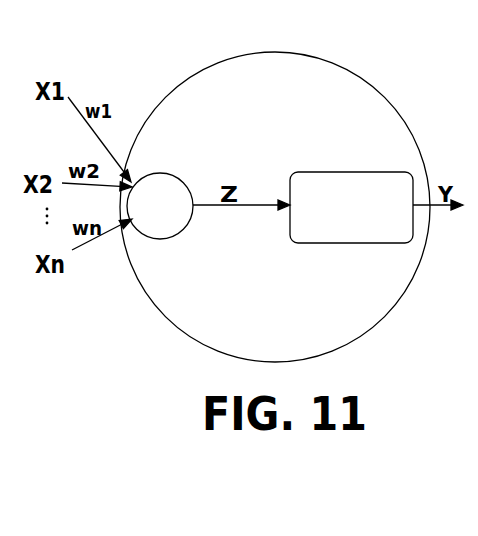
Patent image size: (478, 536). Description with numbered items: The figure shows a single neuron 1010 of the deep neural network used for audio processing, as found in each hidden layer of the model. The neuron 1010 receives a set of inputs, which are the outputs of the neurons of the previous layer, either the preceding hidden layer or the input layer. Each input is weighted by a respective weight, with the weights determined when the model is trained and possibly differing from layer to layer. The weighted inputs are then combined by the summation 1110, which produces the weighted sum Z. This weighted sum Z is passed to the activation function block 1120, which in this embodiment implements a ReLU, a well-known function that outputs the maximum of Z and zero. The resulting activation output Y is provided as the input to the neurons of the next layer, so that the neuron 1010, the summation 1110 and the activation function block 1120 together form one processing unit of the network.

The neuron 1010 is at (313, 44).
The summation 1110 is at (162, 194).
The activation function block 1120 is at (351, 196).